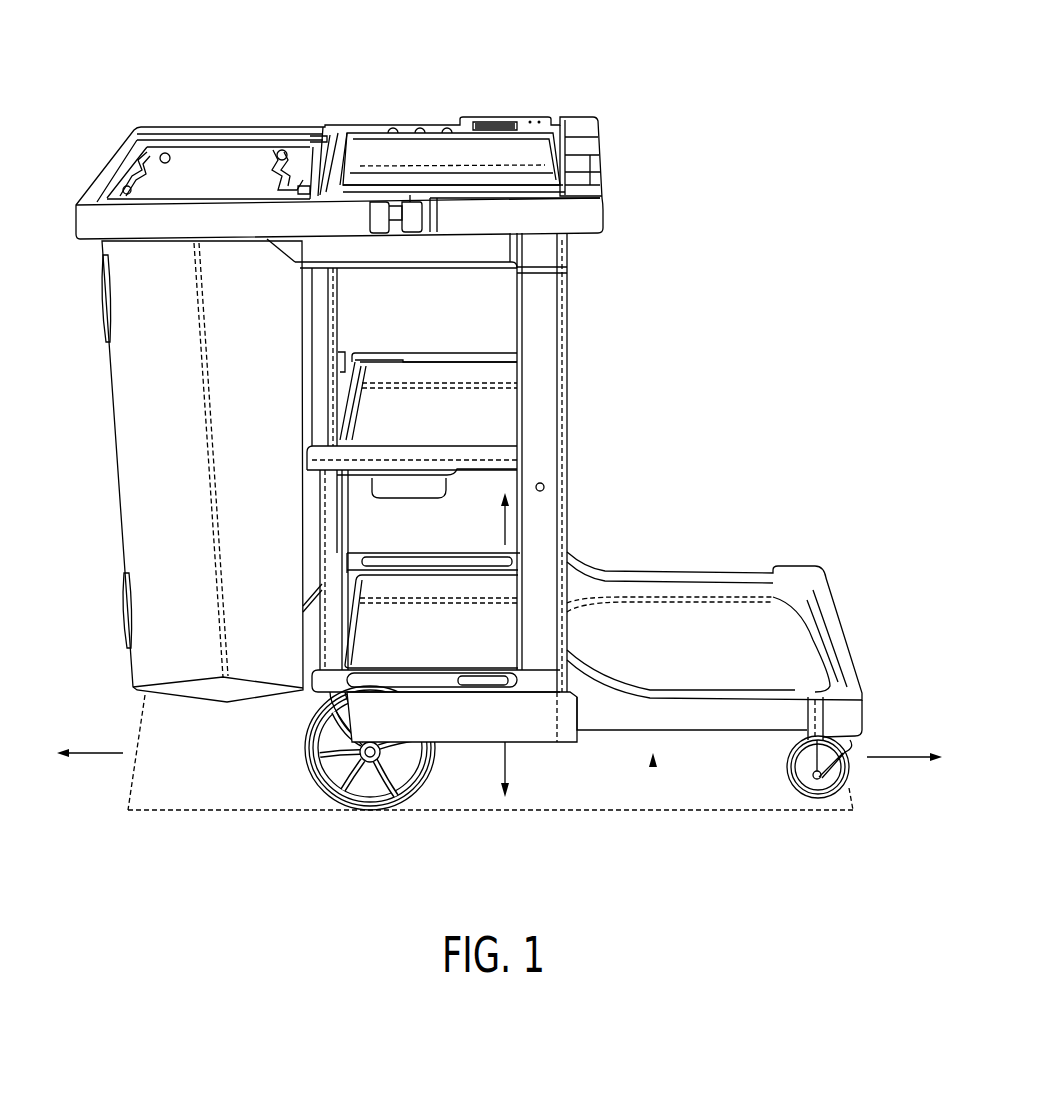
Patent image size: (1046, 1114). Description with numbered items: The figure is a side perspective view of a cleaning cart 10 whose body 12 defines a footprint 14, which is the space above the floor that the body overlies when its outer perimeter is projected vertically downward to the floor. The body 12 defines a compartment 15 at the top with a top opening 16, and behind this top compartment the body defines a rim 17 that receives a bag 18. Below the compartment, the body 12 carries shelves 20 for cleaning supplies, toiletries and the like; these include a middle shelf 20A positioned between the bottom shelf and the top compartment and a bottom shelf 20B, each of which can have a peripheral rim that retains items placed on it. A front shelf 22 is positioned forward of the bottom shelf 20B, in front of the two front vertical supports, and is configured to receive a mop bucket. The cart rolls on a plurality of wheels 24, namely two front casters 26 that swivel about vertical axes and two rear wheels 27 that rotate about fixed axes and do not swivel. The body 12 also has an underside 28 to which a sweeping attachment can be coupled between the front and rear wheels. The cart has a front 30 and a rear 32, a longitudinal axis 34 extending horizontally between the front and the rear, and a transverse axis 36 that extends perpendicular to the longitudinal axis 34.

The cleaning cart 10 is at (795, 135).
The body 12 is at (548, 245).
The footprint 14 is at (623, 780).
The compartment 15 is at (408, 150).
The top opening 16 is at (509, 95).
The rim 17 is at (222, 127).
The bag 18 is at (157, 178).
The shelves 20 is at (505, 410).
The middle shelf 20A is at (445, 410).
The bottom shelf 20B is at (438, 620).
The front shelf 22 is at (795, 655).
The wheels 24 is at (360, 792).
The front casters 26 is at (813, 803).
The rear wheels 27 is at (396, 783).
The underside 28 is at (654, 766).
The front 30 is at (838, 634).
The rear 32 is at (97, 243).
The longitudinal axis 34 is at (100, 757).
The transverse axis 36 is at (508, 762).